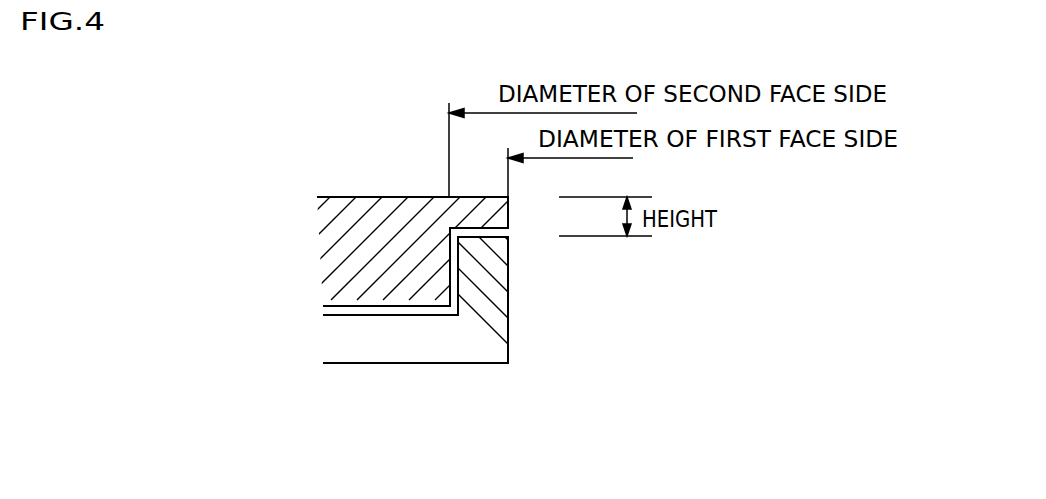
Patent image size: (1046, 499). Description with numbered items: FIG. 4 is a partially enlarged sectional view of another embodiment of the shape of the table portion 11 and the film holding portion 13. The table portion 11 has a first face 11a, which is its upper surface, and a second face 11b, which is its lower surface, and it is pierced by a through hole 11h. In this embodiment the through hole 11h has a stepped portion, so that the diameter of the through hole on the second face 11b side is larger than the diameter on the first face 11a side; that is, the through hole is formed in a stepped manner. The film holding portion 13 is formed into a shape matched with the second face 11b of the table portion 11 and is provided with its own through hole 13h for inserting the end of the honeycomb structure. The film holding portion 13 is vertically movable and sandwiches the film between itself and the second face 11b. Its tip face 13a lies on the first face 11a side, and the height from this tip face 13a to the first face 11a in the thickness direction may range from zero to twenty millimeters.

The table portion 11 is at (395, 217).
The first face 11a is at (341, 197).
The second face 11b is at (342, 310).
The through hole 11h is at (509, 213).
The film holding portion 13 is at (403, 342).
The tip face 13a is at (509, 229).
The through hole 13h is at (508, 329).